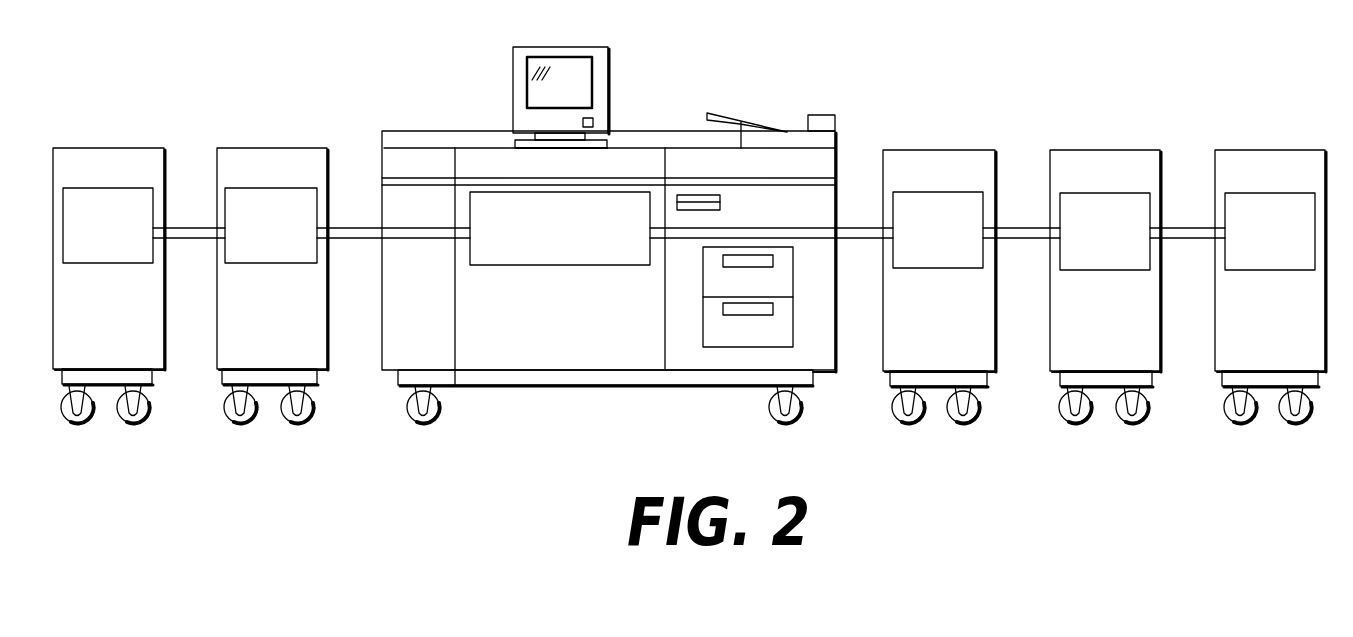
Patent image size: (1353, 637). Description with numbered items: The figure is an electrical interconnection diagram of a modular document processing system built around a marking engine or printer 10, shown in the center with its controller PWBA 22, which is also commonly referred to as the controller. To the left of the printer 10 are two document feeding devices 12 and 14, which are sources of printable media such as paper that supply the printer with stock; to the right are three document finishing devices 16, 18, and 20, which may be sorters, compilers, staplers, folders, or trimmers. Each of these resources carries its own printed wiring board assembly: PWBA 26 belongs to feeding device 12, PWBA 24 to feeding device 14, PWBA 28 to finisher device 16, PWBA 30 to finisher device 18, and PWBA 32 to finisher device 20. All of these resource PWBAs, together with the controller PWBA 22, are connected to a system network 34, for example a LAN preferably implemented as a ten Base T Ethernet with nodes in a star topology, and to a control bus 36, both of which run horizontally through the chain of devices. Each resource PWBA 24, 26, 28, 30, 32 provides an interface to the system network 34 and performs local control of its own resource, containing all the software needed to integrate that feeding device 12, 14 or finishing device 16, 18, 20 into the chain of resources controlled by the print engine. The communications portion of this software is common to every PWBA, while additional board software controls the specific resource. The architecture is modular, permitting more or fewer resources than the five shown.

The printer 10 is at (609, 224).
The document feeding device 12 is at (109, 260).
The document feeding device 14 is at (280, 260).
The document finishing device 16 is at (946, 263).
The document finishing device 18 is at (1111, 264).
The document finishing device 20 is at (1281, 264).
The controller PWBA 22 is at (530, 265).
The PWBA 24 is at (232, 263).
The PWBA 26 is at (73, 263).
The PWBA 28 is at (907, 268).
The PWBA 30 is at (1075, 270).
The PWBA 32 is at (1237, 270).
The system network 34 is at (853, 227).
The control bus 36 is at (362, 240).